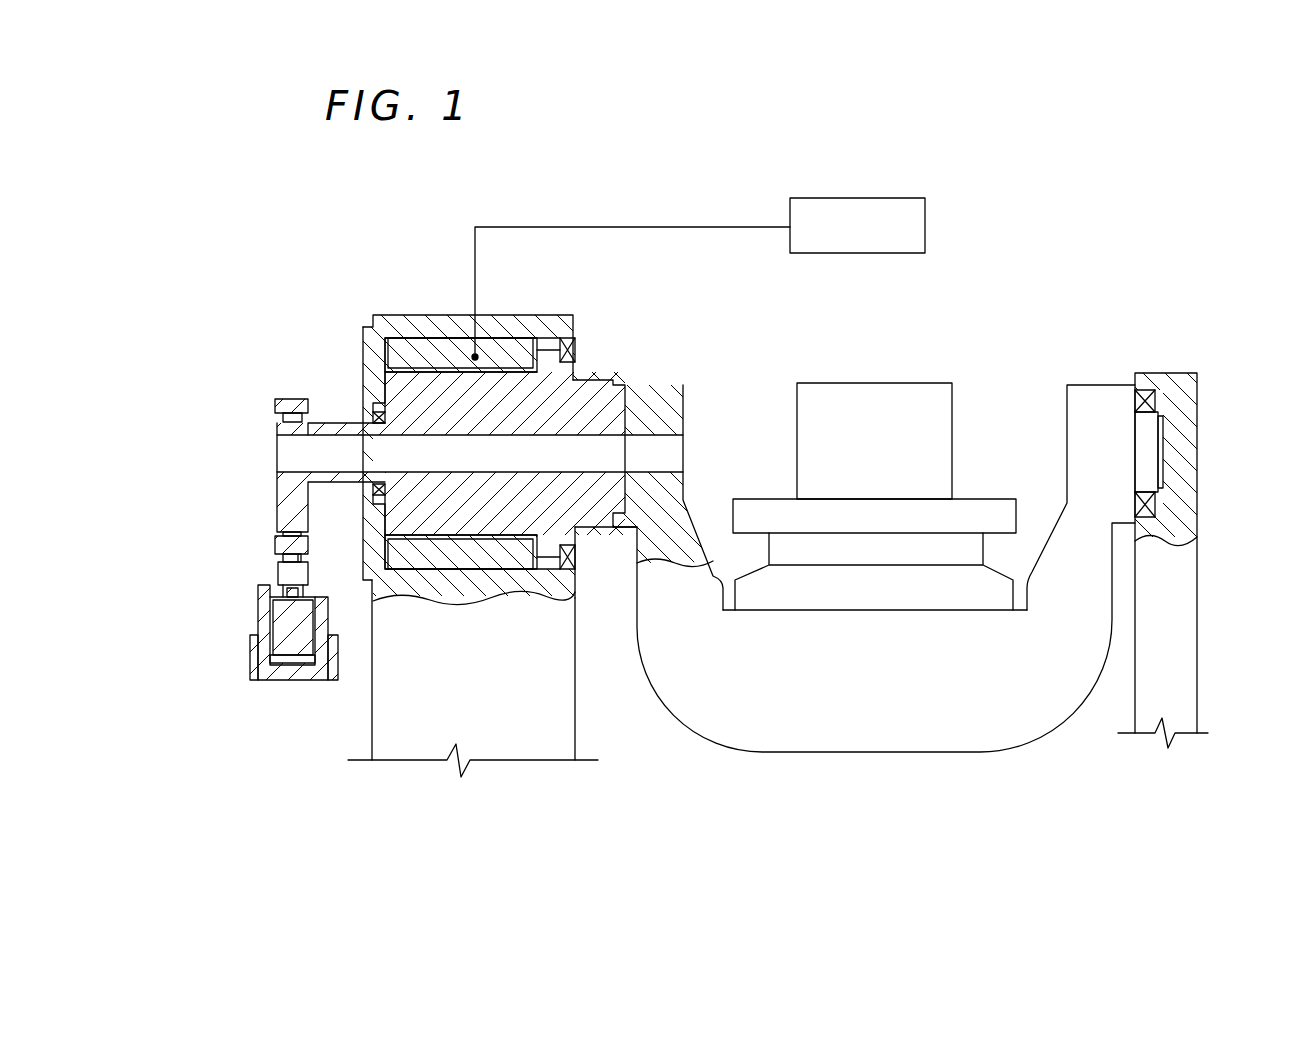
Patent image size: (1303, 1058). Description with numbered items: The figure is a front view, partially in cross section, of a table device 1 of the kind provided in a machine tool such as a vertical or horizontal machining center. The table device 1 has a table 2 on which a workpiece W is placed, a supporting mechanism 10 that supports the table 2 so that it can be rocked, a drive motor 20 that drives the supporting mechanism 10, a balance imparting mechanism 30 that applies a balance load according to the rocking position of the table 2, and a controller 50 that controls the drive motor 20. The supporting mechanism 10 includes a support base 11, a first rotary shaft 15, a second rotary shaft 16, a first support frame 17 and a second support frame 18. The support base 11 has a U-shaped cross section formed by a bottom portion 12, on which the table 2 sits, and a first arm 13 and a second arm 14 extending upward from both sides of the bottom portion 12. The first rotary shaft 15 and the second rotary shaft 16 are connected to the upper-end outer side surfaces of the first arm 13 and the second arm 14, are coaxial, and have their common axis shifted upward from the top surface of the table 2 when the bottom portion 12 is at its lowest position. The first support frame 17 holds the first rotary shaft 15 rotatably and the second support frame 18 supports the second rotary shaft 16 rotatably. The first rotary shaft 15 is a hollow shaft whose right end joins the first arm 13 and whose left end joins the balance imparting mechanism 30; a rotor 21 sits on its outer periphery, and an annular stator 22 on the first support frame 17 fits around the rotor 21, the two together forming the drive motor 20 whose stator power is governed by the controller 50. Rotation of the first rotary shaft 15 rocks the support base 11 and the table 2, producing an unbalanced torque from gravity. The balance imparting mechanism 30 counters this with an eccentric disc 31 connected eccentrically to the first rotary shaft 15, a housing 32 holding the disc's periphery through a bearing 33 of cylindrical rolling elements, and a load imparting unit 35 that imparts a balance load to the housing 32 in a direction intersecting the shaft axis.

The table device 1 is at (1082, 208).
The table 2 is at (975, 499).
The supporting mechanism 10 is at (855, 570).
The support base 11 is at (855, 569).
The bottom portion 12 is at (945, 742).
The first arm 13 is at (678, 454).
The second arm 14 is at (1085, 390).
The first rotary shaft 15 is at (587, 382).
The second rotary shaft 16 is at (1160, 456).
The first support frame 17 is at (523, 752).
The second support frame 18 is at (1163, 373).
The drive motor 20 is at (505, 402).
The rotor 21 is at (516, 354).
The annular stator 22 is at (420, 337).
The balance imparting mechanism 30 is at (421, 550).
The eccentric disc 31 is at (283, 457).
The housing 32 is at (291, 398).
The bearing 33 is at (277, 412).
The load imparting unit 35 is at (298, 707).
The controller 50 is at (925, 225).
The workpiece W is at (880, 382).